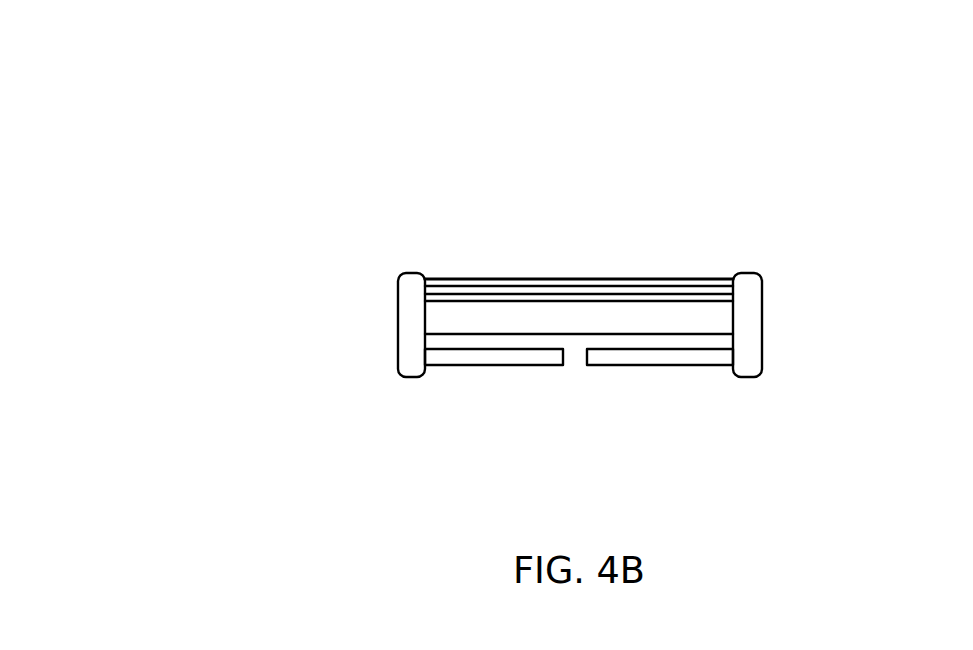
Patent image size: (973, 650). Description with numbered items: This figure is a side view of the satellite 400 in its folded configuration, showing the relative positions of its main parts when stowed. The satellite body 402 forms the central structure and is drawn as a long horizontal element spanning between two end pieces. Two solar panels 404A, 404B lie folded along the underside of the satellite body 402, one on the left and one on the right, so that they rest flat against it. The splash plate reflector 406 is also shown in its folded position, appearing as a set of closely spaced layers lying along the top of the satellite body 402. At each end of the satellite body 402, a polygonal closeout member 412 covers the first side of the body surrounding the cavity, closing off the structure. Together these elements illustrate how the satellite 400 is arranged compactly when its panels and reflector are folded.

The satellite 400 is at (404, 117).
The satellite body 402 is at (435, 313).
The solar panel 404A is at (447, 353).
The solar panel 404B is at (710, 353).
The splash plate reflector 406 is at (684, 288).
The polygonal closeout member 412 is at (607, 277).